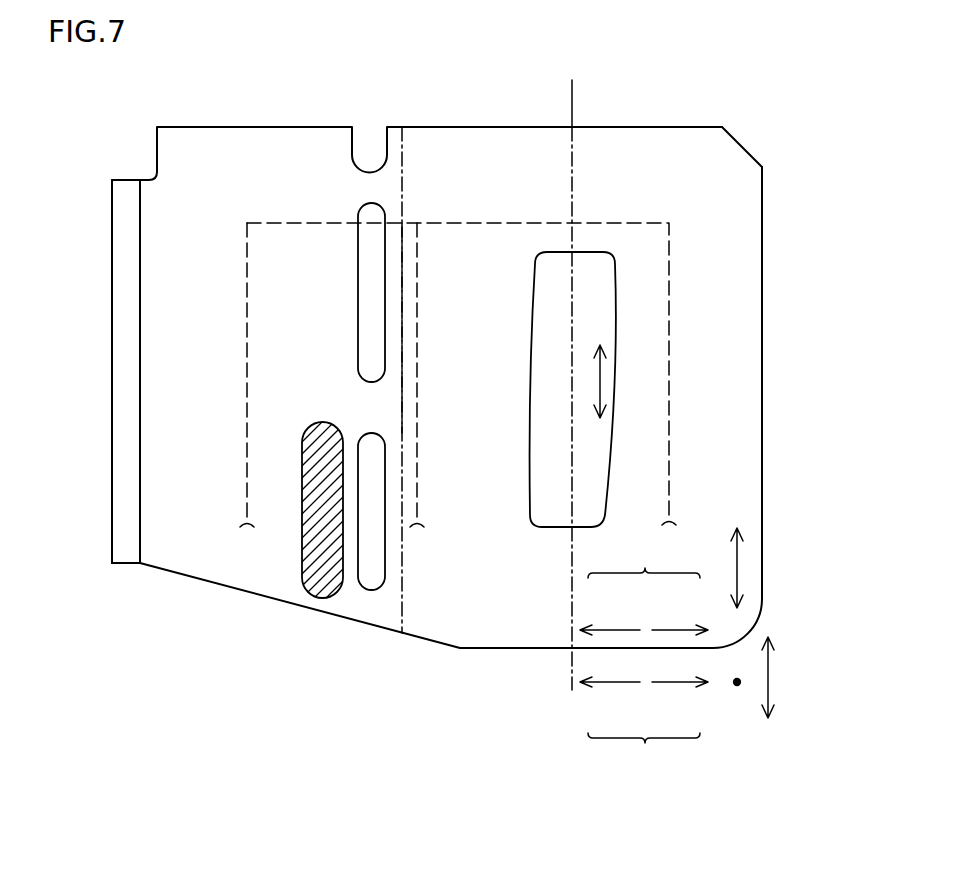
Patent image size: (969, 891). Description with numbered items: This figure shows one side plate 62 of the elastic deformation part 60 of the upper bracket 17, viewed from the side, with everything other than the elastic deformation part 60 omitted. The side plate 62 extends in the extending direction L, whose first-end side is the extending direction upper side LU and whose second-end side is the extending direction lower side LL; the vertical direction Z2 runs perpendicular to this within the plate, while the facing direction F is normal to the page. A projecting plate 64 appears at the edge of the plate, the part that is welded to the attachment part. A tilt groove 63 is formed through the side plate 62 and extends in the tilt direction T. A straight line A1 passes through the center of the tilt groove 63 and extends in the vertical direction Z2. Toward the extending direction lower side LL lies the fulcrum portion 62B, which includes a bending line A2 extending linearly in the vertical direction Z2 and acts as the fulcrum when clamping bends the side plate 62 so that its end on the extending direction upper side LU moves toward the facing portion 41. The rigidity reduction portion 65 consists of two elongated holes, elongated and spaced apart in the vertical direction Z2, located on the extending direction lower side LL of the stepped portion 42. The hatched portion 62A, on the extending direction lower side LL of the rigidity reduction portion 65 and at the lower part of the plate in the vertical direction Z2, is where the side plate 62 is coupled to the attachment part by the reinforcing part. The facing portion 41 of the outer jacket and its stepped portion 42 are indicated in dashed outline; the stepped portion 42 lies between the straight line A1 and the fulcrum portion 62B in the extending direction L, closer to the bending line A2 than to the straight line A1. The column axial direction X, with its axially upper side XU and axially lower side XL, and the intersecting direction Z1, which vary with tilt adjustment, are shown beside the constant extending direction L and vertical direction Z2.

The upper bracket 17 is at (662, 96).
The elastic deformation part 60 is at (746, 120).
The projecting plate 64 is at (118, 358).
The side plate 62 is at (745, 450).
The portion of the side plate 62A is at (302, 568).
The fulcrum portion 62B is at (402, 335).
The rigidity reduction portion 65 is at (366, 292).
The tilt groove 63 is at (534, 500).
The facing portion 41 is at (669, 300).
The stepped portion 42 is at (417, 257).
The straight line A1 is at (570, 96).
The bending line A2 is at (402, 405).
The tilt direction T is at (602, 382).
The intersecting direction Z1 is at (775, 677).
The vertical direction Z2 is at (745, 568).
The extending direction L is at (644, 559).
The extending direction lower side LL is at (624, 628).
The extending direction upper side LU is at (666, 628).
The column axial direction X is at (644, 754).
The axially lower side XL is at (616, 686).
The axially upper side XU is at (672, 686).
The facing direction F is at (737, 686).